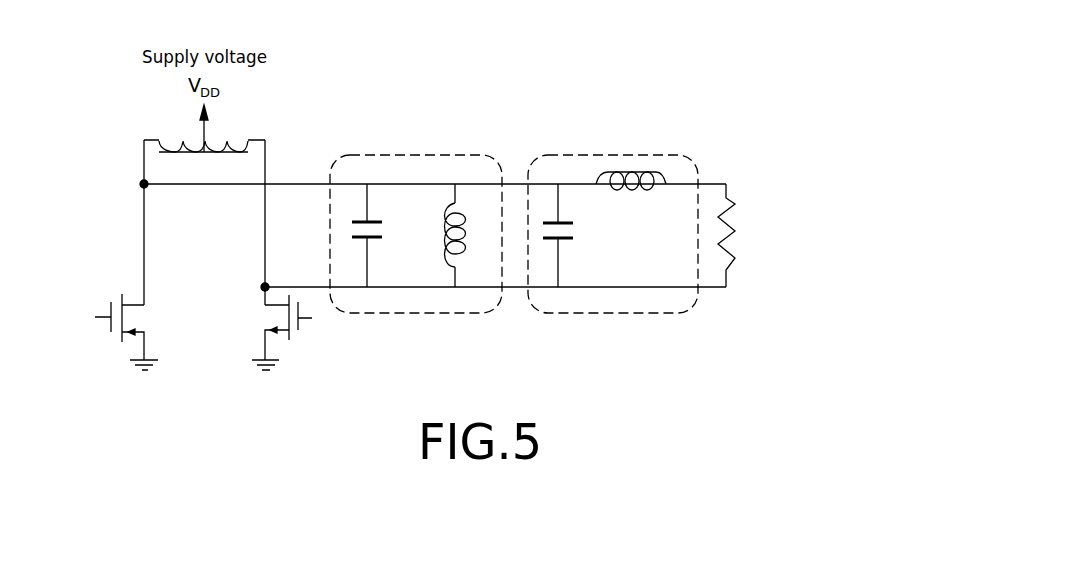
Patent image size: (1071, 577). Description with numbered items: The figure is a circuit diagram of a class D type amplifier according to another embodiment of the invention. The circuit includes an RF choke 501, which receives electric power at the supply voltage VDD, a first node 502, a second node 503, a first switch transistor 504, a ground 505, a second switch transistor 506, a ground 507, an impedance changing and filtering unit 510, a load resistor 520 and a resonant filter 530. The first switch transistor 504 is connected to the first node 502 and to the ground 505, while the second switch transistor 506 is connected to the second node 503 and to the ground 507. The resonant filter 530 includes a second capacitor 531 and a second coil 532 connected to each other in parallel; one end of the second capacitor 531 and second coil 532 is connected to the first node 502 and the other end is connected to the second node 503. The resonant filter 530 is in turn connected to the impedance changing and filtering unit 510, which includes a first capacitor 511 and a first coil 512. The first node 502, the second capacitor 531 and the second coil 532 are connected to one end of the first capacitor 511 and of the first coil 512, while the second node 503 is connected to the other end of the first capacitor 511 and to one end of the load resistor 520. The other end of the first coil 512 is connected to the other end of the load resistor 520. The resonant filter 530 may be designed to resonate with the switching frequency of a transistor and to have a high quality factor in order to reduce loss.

The RF choke 501 is at (226, 149).
The first node 502 is at (139, 184).
The second node 503 is at (260, 287).
The first switch transistor 504 is at (109, 331).
The ground 505 is at (152, 370).
The second switch transistor 506 is at (304, 332).
The ground 507 is at (273, 370).
The impedance changing and filtering unit 510 is at (612, 155).
The first capacitor 511 is at (575, 226).
The first coil 512 is at (645, 192).
The load resistor 520 is at (737, 252).
The resonant filter 530 is at (414, 155).
The second capacitor 531 is at (382, 240).
The second coil 532 is at (463, 252).